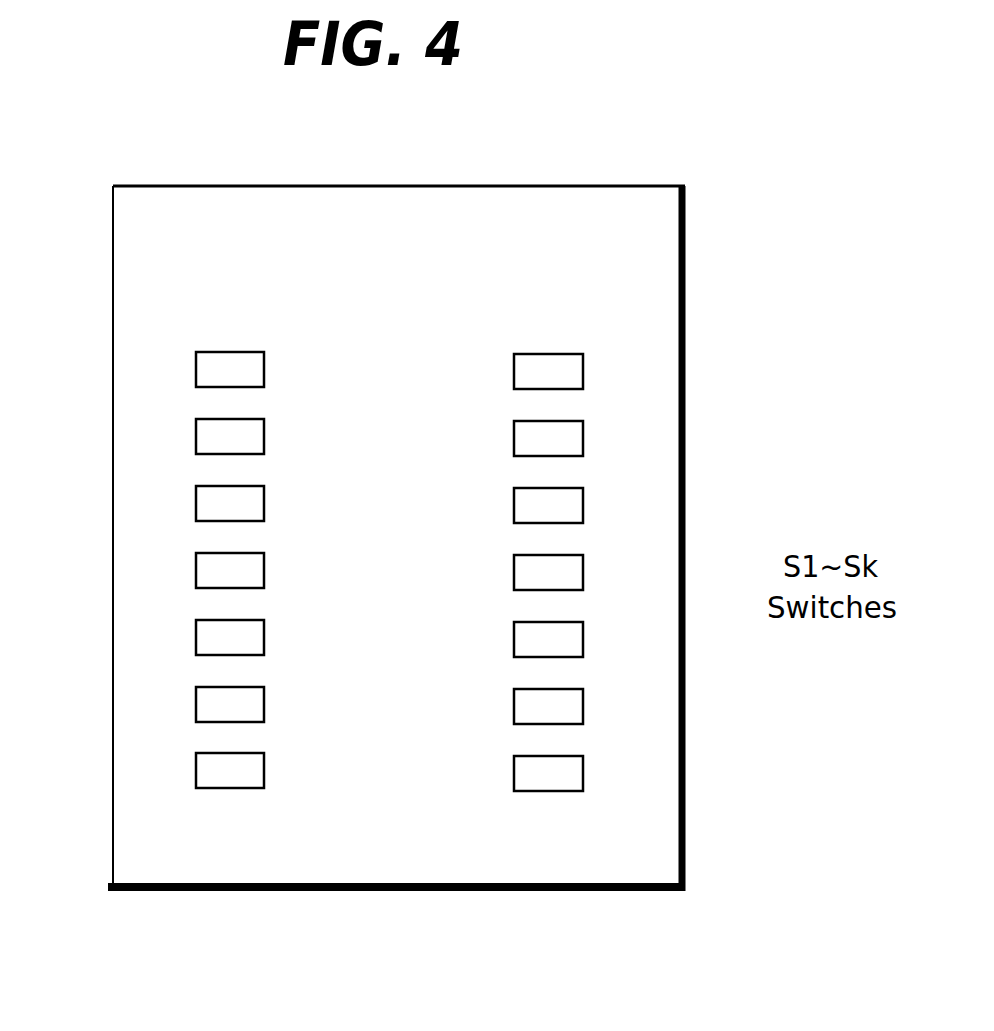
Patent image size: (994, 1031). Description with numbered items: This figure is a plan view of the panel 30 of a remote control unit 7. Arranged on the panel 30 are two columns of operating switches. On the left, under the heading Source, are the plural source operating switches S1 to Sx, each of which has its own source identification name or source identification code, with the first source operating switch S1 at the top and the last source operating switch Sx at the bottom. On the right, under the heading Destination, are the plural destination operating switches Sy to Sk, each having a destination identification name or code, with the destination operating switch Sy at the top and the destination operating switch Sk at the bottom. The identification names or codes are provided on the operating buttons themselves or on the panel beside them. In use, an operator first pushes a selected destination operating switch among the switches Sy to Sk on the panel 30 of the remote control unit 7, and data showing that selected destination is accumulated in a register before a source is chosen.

The remote control unit 7 is at (228, 890).
The panel 30 is at (683, 842).
The source operating switch S1 is at (197, 371).
The source operating switch Sx is at (196, 771).
The destination operating switch Sy is at (583, 373).
The destination operating switch Sk is at (583, 772).